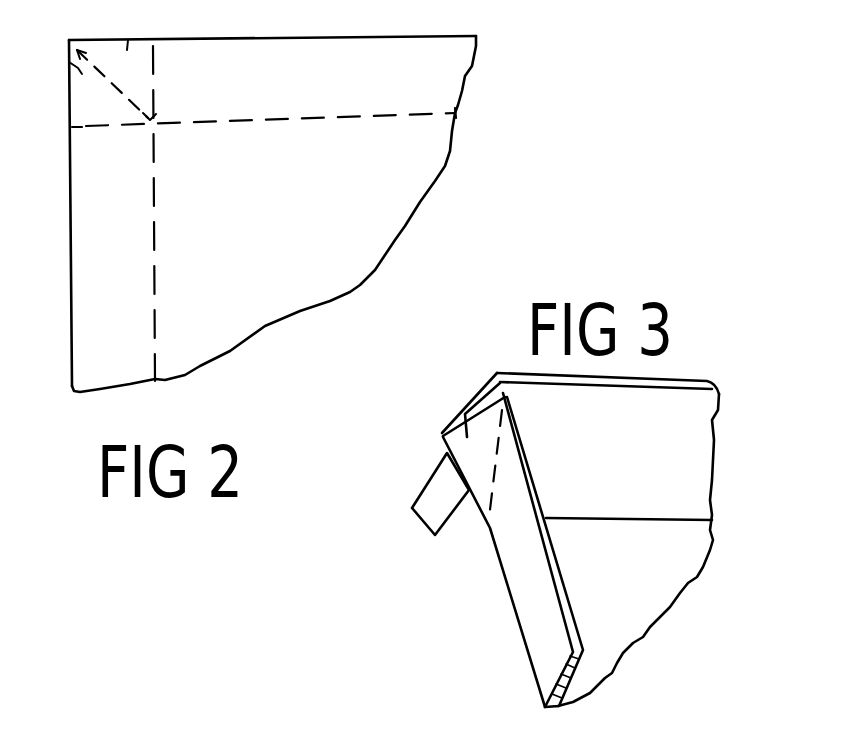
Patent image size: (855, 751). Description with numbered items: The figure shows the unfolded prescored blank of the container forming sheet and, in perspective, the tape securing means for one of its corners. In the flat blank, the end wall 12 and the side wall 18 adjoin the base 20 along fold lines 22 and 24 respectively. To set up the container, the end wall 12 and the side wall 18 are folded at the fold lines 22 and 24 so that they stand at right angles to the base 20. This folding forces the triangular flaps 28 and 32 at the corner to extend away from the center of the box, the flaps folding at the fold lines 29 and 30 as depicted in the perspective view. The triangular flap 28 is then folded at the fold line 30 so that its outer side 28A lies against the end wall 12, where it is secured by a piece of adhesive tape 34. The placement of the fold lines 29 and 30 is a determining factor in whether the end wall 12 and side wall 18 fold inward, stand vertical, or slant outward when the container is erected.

In FIG. 2, the end wall 12 is at (82, 188).
In FIG. 3, the end wall 12 is at (518, 583).
In FIG. 2, the side wall 18 is at (307, 52).
In FIG. 3, the side wall 18 is at (676, 402).
In FIG. 3, the base 20 is at (632, 550).
In FIG. 2, the fold line 22 is at (152, 172).
In FIG. 2, the fold line 24 is at (356, 114).
In FIG. 2, the triangular flap 28 is at (69, 62).
In FIG. 3, the outer side 28A is at (466, 414).
In FIG. 2, the fold line 29 is at (76, 42).
In FIG. 3, the fold line 29 is at (443, 447).
In FIG. 2, the fold line 30 is at (72, 127).
In FIG. 3, the fold line 30 is at (490, 500).
In FIG. 2, the triangular flap 32 is at (128, 40).
In FIG. 3, the adhesive tape 34 is at (418, 512).